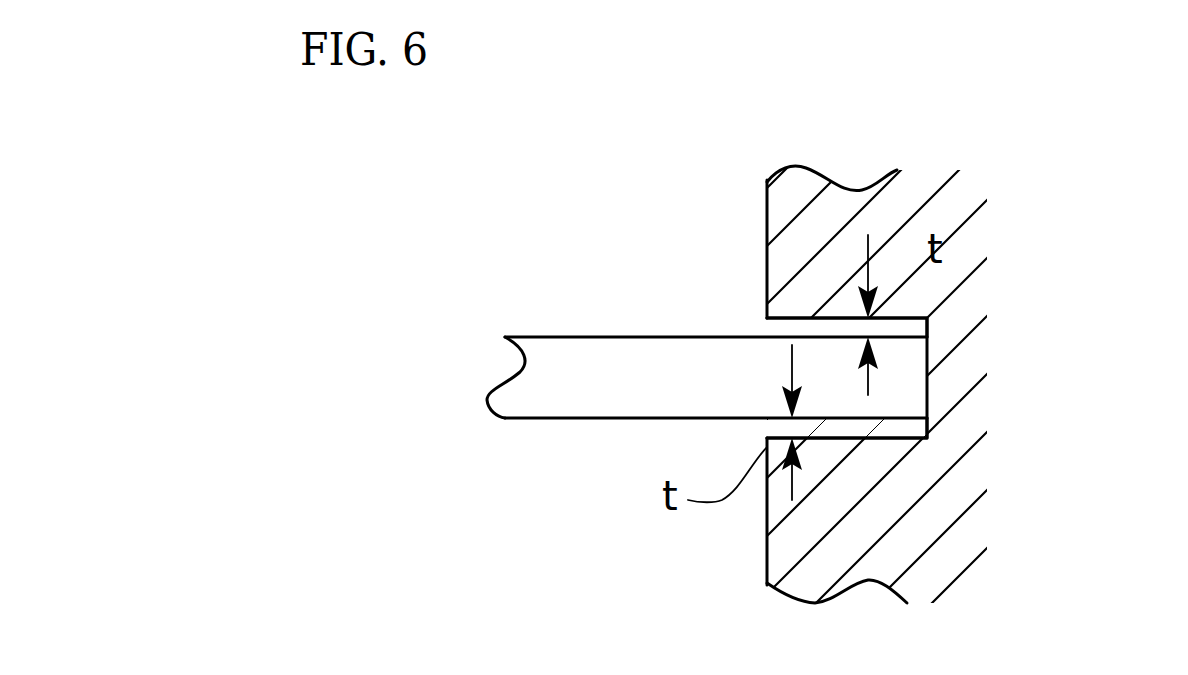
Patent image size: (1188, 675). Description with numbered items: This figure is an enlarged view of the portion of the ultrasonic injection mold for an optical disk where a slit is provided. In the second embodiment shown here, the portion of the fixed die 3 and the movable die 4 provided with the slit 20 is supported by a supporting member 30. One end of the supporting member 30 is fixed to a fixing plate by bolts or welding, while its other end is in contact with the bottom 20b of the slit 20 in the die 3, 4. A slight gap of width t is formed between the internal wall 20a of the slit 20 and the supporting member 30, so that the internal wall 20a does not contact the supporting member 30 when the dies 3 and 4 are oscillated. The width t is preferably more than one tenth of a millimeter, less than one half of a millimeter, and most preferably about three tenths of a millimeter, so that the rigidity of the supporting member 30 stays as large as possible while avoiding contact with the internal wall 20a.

The fixed die 3 is at (761, 390).
The movable die 4 is at (767, 270).
The supporting member 30 is at (565, 337).
The slit 20 is at (761, 390).
The internal wall 20a is at (863, 418).
The bottom 20b is at (927, 393).